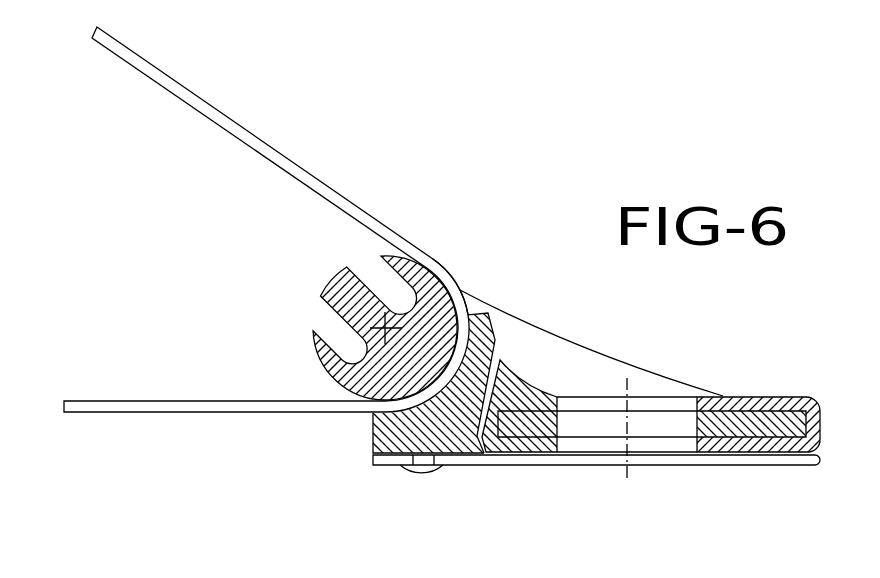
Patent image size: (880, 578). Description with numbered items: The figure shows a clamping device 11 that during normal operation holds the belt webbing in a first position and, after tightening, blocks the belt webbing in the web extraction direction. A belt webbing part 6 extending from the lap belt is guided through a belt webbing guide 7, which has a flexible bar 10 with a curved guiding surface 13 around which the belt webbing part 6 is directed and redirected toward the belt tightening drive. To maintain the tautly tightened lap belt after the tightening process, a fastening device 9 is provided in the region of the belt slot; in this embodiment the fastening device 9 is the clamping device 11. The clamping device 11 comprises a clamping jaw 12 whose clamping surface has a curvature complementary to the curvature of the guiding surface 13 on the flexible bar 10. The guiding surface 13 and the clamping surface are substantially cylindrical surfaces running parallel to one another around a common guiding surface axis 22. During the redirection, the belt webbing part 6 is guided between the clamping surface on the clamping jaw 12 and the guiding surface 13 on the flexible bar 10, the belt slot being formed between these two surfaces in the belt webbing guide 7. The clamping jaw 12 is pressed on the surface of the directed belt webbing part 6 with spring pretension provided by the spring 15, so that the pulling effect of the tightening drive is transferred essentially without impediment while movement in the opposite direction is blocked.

The belt webbing part 6 is at (224, 122).
The belt webbing guide 7 is at (510, 383).
The fastening device 9 is at (482, 279).
The flexible bar 10 is at (349, 276).
The clamping device 11 is at (409, 486).
The clamping jaw 12 is at (384, 434).
The guiding surface 13 is at (453, 342).
The spring 15 is at (544, 466).
The guiding surface axis 22 is at (383, 326).